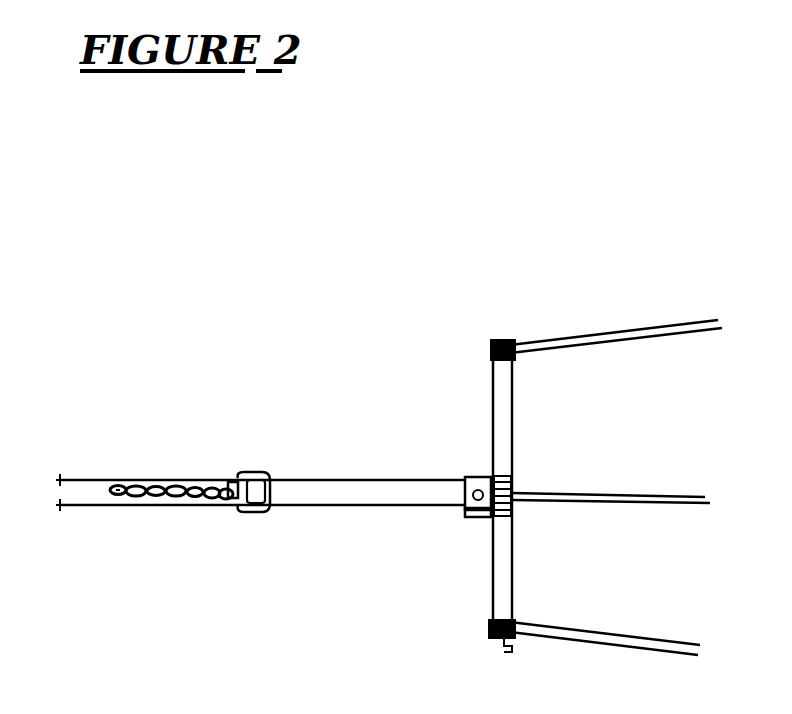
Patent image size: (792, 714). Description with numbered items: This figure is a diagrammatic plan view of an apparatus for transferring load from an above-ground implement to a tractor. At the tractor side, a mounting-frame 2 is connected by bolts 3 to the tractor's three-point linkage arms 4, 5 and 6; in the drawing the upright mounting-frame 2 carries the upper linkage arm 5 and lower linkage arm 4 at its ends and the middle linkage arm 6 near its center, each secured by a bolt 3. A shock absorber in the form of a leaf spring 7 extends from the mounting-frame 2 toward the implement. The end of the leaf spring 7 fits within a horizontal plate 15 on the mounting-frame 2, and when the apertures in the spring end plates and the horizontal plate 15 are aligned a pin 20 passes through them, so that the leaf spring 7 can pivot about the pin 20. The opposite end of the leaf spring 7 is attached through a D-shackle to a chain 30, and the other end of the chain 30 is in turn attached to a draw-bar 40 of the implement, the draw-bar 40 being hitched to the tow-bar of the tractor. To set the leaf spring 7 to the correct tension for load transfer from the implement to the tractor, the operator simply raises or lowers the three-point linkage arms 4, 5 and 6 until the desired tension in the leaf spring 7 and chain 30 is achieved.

The mounting-frame 2 is at (498, 437).
The bolts 3 is at (505, 340).
The three-point linkage arm 4 is at (581, 632).
The three-point linkage arm 5 is at (638, 333).
The three-point linkage arm 6 is at (610, 492).
The leaf spring 7 is at (345, 487).
The horizontal plate 15 is at (484, 514).
The pin 20 is at (468, 478).
The chain 30 is at (184, 481).
The draw-bar 40 is at (88, 478).